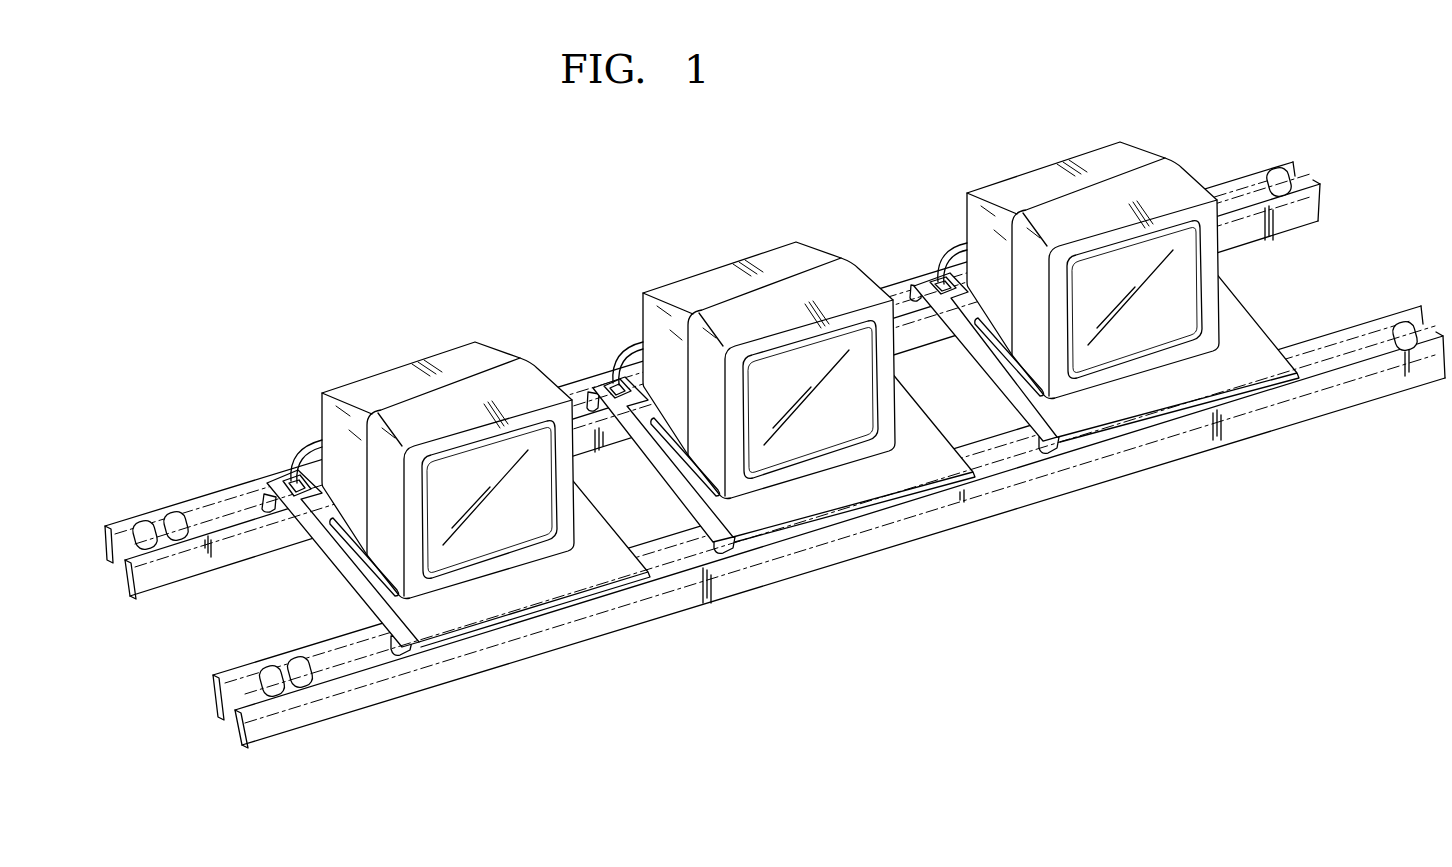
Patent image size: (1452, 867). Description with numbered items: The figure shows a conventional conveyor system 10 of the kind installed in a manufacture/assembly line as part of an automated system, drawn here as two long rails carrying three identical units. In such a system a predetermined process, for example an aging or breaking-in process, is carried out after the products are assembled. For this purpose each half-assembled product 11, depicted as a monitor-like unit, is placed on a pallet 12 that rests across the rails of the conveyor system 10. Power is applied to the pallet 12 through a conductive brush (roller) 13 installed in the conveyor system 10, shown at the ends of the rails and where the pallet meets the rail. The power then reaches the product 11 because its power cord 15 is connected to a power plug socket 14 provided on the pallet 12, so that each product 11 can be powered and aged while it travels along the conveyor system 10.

The conveyor system 10 is at (797, 617).
The half-assembled product 11 is at (400, 388).
The pallet 12 is at (580, 582).
The conductive brush (roller) 13 is at (311, 668).
The power plug socket 14 is at (295, 481).
The power cord 15 is at (313, 445).